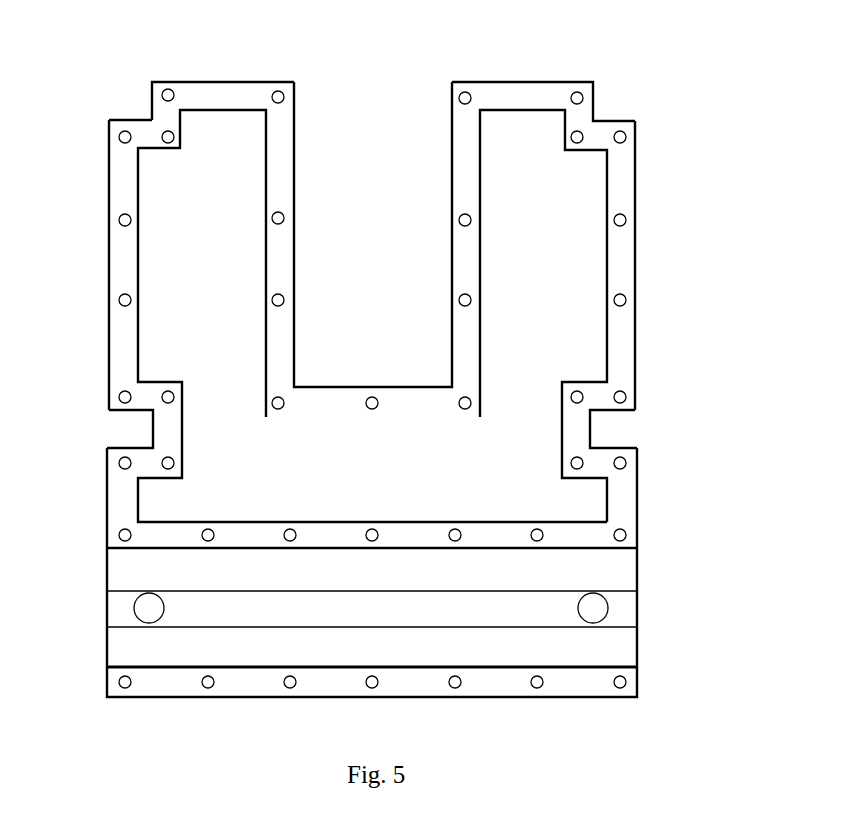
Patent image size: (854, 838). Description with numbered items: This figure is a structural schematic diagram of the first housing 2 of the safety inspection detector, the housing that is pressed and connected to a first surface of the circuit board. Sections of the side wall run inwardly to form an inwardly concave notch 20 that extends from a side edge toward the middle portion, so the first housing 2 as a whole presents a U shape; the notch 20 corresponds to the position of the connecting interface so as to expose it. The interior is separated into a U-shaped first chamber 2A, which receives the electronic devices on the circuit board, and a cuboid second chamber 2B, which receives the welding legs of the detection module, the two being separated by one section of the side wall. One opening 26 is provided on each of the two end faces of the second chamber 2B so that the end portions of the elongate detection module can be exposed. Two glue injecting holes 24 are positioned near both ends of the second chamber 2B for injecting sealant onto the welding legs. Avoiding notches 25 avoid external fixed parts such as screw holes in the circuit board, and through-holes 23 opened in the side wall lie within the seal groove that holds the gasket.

The first housing 2 is at (646, 274).
The notch 20 is at (373, 125).
The through-hole 23 is at (163, 82).
The first chamber 2A is at (592, 197).
The avoiding notch 25 is at (135, 102).
The second chamber 2B is at (617, 565).
The glue injecting hole 24 is at (600, 605).
The opening 26 is at (103, 608).